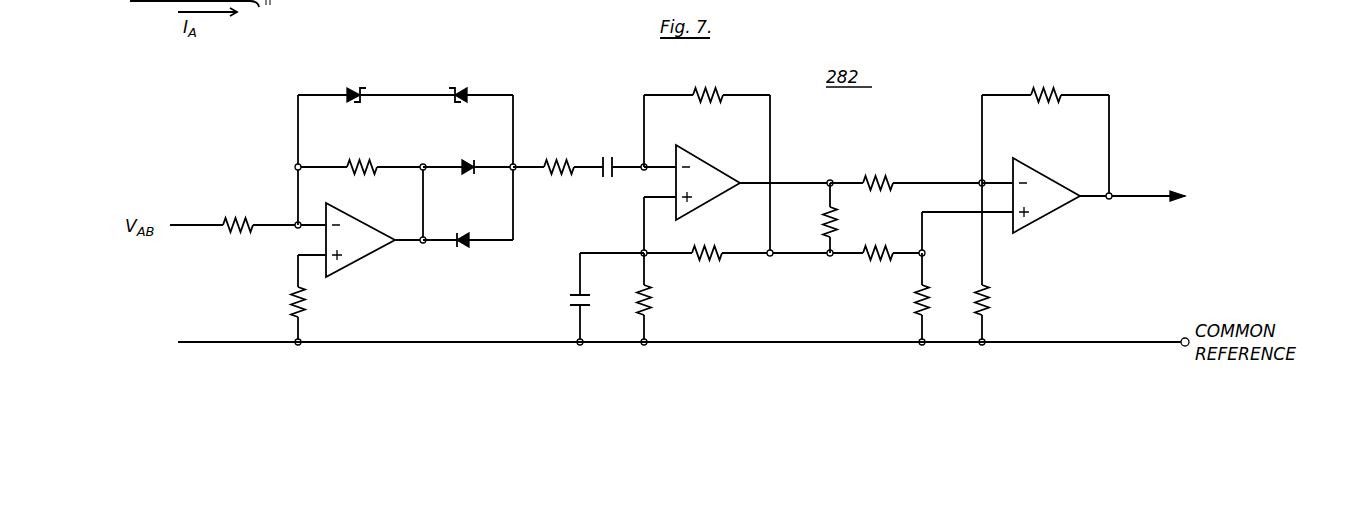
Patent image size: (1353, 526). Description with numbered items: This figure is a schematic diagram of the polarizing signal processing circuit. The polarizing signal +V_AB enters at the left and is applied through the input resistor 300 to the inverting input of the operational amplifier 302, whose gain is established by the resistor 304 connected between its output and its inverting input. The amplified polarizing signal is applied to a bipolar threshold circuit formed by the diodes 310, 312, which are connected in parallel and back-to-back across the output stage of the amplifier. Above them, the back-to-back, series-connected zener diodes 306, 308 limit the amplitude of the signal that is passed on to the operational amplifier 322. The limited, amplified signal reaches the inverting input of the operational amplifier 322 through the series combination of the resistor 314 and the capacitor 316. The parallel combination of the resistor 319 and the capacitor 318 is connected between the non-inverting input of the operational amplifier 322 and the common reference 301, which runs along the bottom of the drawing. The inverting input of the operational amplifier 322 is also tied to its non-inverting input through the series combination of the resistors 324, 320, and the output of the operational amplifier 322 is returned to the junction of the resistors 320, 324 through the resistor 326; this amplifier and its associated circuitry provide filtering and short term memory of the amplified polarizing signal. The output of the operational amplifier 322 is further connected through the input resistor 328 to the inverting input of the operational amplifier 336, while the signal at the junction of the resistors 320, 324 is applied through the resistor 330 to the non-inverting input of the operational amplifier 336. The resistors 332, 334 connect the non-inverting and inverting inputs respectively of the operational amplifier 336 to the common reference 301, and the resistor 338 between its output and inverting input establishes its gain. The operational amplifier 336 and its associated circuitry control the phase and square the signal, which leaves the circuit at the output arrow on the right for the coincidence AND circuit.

The input resistor 300 is at (247, 214).
The common reference 301 is at (780, 344).
The operational amplifier 302 is at (357, 252).
The resistor 304 is at (347, 158).
The zener diode 306 is at (350, 88).
The zener diode 308 is at (468, 89).
The diode 310 is at (466, 160).
The diode 312 is at (468, 250).
The resistor 314 is at (561, 156).
The capacitor 316 is at (609, 186).
The capacitor 318 is at (570, 298).
The resistor 319 is at (654, 304).
The resistor 320 is at (718, 262).
The operational amplifier 322 is at (712, 169).
The resistor 324 is at (695, 89).
The resistor 326 is at (824, 215).
The input resistor 328 is at (889, 174).
The resistor 330 is at (883, 244).
The resistor 332 is at (912, 299).
The resistor 334 is at (995, 299).
The operational amplifier 336 is at (1045, 221).
The resistor 338 is at (1058, 88).